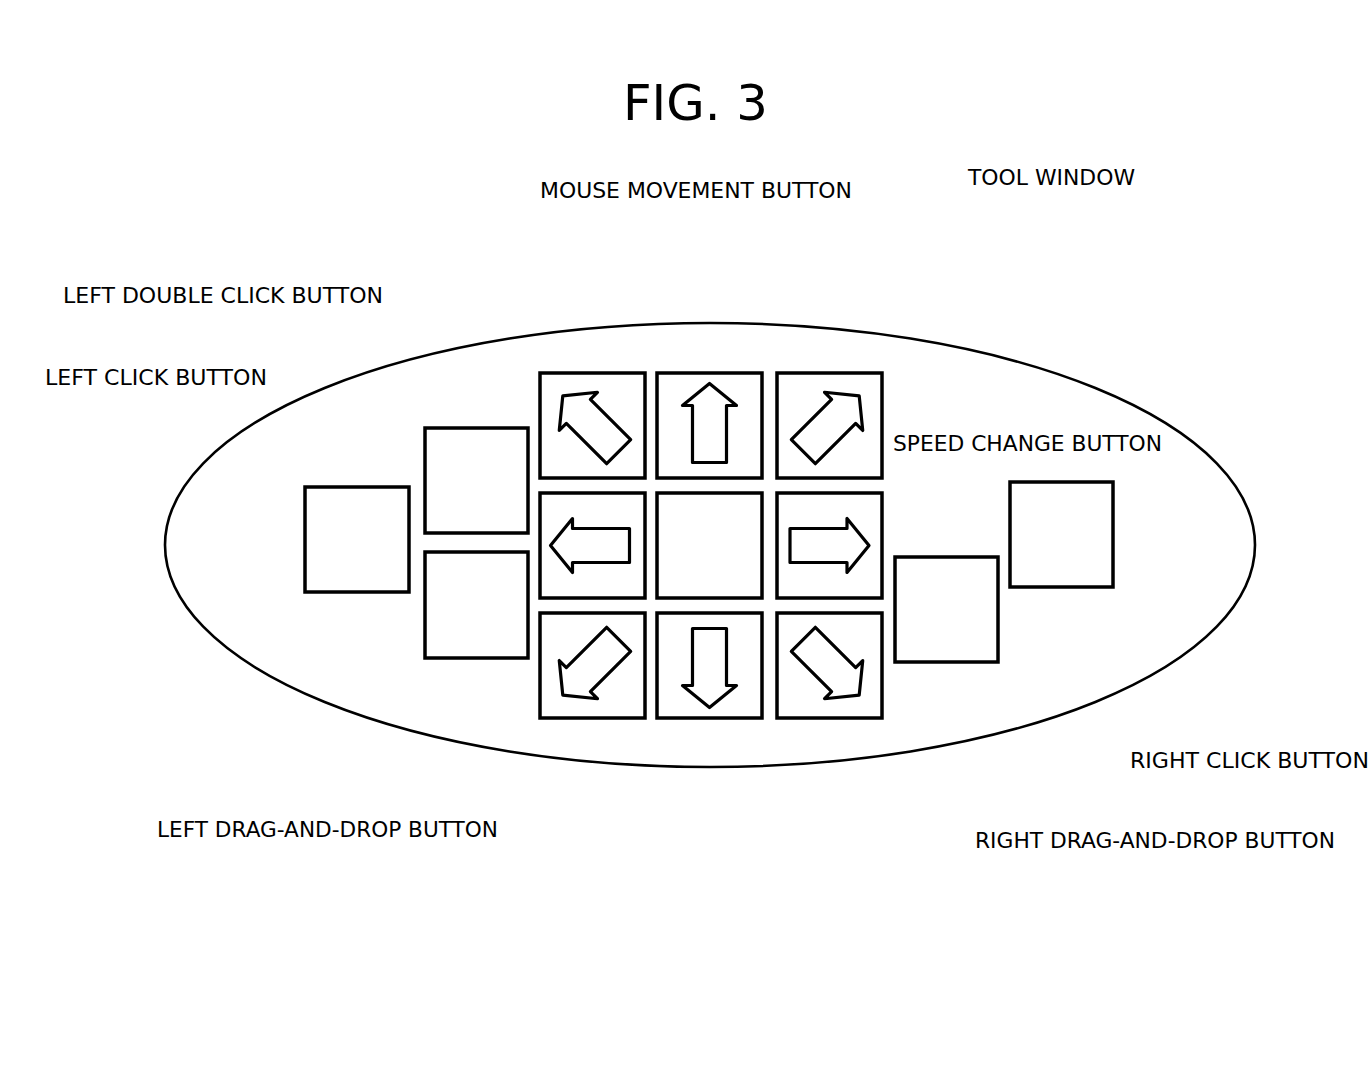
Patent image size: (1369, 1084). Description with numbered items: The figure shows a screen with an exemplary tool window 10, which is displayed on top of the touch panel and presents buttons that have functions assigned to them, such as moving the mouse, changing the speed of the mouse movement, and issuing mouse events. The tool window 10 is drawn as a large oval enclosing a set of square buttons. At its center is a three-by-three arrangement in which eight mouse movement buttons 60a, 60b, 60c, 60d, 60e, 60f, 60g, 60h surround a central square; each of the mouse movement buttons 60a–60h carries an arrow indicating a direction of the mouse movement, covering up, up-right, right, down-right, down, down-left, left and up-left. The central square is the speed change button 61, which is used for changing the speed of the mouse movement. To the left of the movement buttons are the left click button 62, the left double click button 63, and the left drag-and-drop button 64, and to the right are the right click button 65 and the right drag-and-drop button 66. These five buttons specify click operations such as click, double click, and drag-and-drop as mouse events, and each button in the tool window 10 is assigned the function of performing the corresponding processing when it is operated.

The tool window 10 is at (937, 340).
The mouse movement button 60a is at (717, 372).
The mouse movement button 60b is at (818, 382).
The mouse movement button 60c is at (590, 390).
The mouse movement button 60d is at (867, 521).
The mouse movement button 60e is at (558, 512).
The mouse movement button 60f is at (802, 702).
The mouse movement button 60g is at (725, 703).
The mouse movement button 60h is at (608, 700).
The speed change button 61 is at (718, 547).
The left click button 62 is at (343, 532).
The left double click button 63 is at (470, 472).
The left drag-and-drop button 64 is at (458, 637).
The right click button 65 is at (1065, 565).
The right drag-and-drop button 66 is at (947, 620).